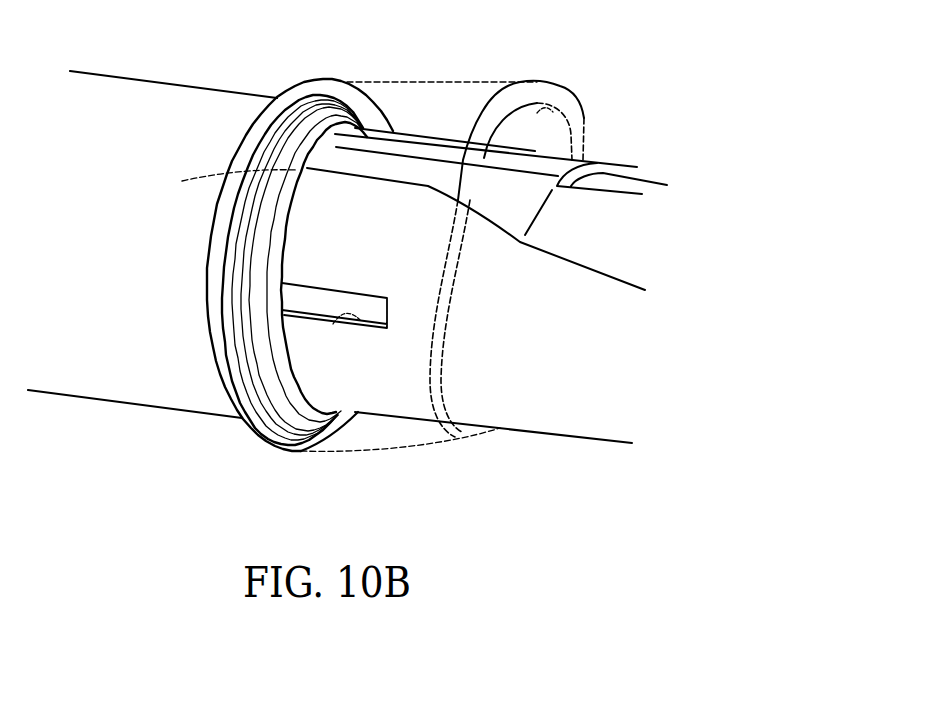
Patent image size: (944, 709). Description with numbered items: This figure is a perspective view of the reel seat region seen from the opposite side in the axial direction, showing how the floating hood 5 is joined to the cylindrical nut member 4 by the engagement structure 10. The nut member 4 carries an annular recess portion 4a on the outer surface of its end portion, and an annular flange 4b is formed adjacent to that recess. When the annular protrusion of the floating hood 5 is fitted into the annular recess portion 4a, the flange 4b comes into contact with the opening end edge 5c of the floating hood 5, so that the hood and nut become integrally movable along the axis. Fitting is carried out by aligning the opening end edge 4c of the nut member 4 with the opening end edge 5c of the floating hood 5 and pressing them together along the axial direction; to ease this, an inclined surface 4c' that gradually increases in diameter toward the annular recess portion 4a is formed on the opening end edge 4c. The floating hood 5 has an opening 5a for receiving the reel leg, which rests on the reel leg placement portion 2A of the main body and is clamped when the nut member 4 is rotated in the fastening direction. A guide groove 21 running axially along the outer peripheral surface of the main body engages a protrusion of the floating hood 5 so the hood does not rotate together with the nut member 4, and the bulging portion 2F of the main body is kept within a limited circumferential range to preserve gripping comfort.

The nut member 4 is at (167, 97).
The annular recess portion 4a is at (313, 100).
The annular flange 4b is at (293, 88).
The opening end edge 4c is at (342, 229).
The inclined surface 4c' is at (253, 274).
The floating hood 5 is at (463, 93).
The opening 5a is at (543, 112).
The opening end edge 5c is at (228, 218).
The reel leg placement portion 2A is at (557, 163).
The bulging portion 2F is at (204, 178).
The engagement structure 10 is at (245, 435).
The guide groove 21 is at (366, 326).